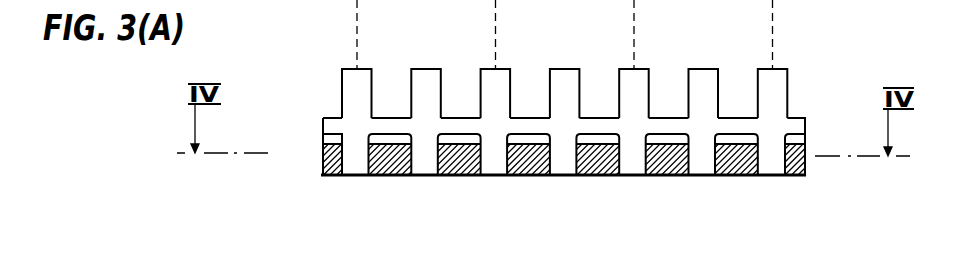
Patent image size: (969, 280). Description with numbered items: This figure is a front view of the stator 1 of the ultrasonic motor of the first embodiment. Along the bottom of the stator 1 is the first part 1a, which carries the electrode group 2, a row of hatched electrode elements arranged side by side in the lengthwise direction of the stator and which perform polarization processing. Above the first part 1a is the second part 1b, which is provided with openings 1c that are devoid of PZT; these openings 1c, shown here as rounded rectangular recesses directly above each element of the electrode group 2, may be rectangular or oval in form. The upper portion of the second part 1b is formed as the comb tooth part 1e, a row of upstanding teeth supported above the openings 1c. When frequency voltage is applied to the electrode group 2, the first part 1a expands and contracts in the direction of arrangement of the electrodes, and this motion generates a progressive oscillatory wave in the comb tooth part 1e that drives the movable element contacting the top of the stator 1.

The stator 1 is at (792, 126).
The first part 1a is at (317, 138).
The second part 1b is at (317, 68).
The openings 1c is at (462, 138).
The comb tooth part 1e is at (424, 77).
The electrode group 2 is at (395, 158).